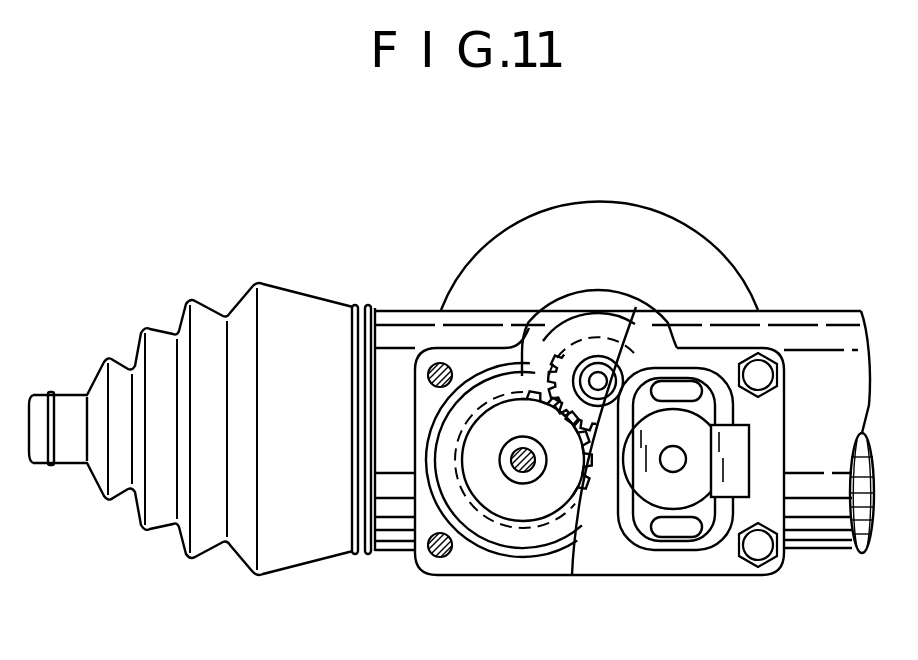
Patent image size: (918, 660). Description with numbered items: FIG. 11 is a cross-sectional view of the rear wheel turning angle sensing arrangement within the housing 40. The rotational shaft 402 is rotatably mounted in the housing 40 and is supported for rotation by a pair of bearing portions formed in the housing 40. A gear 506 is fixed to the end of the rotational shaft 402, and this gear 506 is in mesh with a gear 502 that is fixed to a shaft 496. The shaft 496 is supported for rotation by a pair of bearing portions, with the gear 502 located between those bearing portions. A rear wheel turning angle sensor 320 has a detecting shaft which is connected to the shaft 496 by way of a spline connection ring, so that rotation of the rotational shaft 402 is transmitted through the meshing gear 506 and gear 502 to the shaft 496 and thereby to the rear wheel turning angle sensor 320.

The housing 40 is at (722, 278).
The rotational shaft 402 is at (592, 381).
The gear 506 is at (594, 380).
The shaft 496 is at (521, 483).
The gear 502 is at (547, 503).
The rear wheel turning angle sensor 320 is at (678, 497).